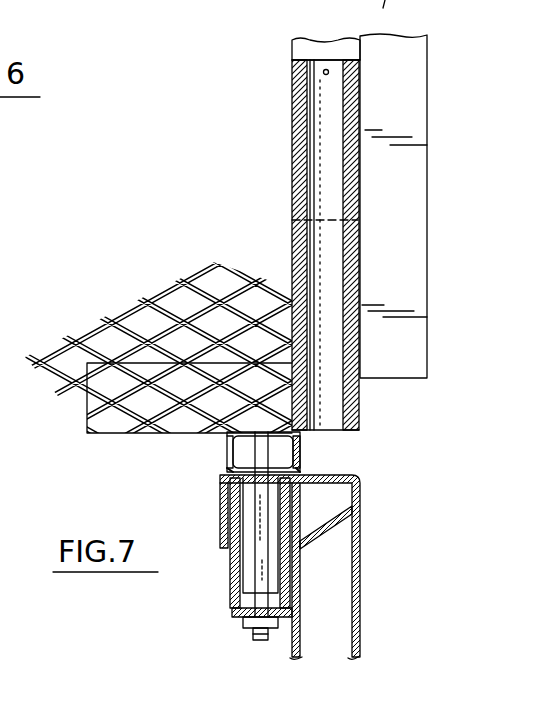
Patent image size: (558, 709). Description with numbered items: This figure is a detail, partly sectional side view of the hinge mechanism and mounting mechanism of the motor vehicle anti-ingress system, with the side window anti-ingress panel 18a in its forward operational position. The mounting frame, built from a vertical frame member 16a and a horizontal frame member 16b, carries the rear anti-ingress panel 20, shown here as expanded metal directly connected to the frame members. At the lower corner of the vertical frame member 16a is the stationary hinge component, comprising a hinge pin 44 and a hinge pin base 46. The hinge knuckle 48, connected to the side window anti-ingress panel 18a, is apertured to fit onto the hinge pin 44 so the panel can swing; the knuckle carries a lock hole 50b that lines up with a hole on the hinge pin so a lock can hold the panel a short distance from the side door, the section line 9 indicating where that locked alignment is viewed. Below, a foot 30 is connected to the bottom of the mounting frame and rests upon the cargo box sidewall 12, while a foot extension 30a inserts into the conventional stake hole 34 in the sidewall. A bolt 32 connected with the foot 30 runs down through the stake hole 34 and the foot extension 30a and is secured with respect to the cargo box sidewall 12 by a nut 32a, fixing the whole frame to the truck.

The section line 9- 9 is at (273, 67).
The cargo box sidewall 12 is at (360, 495).
The vertical frame member 16a is at (292, 50).
The horizontal frame member 16b is at (156, 433).
The side window anti-ingress panel 18a is at (427, 173).
The rear anti-ingress panel 20 is at (163, 295).
The foot 30 is at (300, 458).
The foot extension 30a is at (300, 570).
The bolt 32 is at (250, 558).
The nut 32a is at (243, 627).
The stake hole 34 is at (232, 463).
The hinge pin 44 is at (357, 398).
The hinge pin base 46 is at (358, 355).
The hinge knuckle 48 is at (292, 133).
The lock hole 50b is at (327, 70).